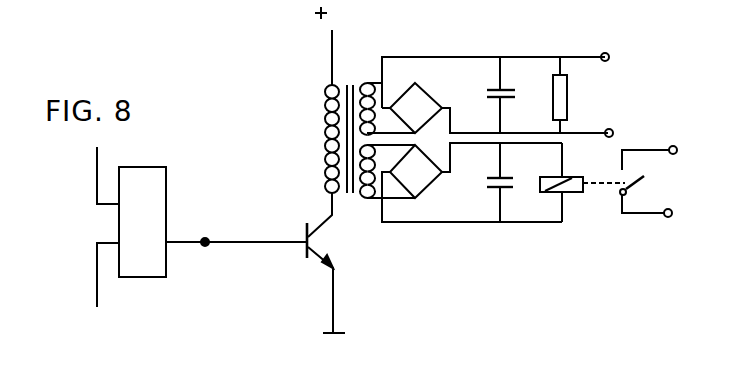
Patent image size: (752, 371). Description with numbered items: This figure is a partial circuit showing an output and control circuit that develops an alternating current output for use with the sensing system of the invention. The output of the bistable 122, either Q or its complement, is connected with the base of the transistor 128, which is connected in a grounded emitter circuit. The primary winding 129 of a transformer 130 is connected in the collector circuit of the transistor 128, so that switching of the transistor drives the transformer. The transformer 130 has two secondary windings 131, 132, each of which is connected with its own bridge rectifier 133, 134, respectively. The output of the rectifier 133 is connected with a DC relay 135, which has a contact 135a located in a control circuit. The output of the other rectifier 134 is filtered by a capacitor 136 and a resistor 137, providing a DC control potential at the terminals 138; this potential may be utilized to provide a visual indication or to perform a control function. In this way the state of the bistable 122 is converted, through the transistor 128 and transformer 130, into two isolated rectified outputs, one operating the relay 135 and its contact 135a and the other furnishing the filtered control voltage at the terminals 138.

The bistable 122 is at (150, 266).
The transistor 128 is at (305, 256).
The primary winding 129 is at (325, 121).
The transformer 130 is at (345, 83).
The secondary winding 131 is at (377, 200).
The secondary winding 132 is at (369, 83).
The bridge rectifier 133 is at (430, 182).
The bridge rectifier 134 is at (420, 103).
The DC relay 135 is at (612, 54).
The contact 135a is at (646, 185).
The capacitor 136 is at (517, 88).
The resistor 137 is at (566, 104).
The terminals 138 is at (613, 129).